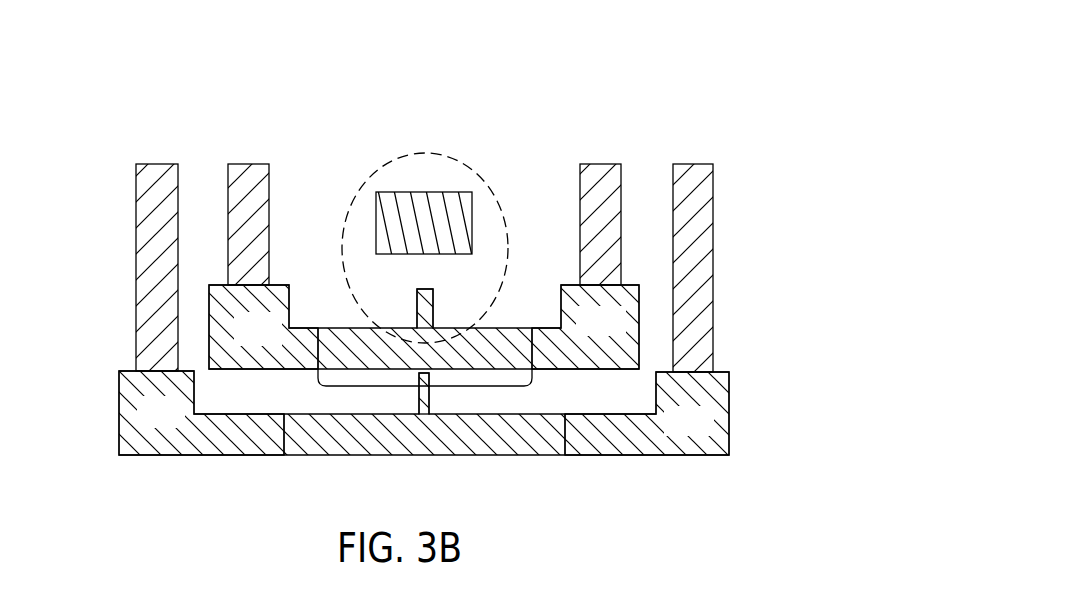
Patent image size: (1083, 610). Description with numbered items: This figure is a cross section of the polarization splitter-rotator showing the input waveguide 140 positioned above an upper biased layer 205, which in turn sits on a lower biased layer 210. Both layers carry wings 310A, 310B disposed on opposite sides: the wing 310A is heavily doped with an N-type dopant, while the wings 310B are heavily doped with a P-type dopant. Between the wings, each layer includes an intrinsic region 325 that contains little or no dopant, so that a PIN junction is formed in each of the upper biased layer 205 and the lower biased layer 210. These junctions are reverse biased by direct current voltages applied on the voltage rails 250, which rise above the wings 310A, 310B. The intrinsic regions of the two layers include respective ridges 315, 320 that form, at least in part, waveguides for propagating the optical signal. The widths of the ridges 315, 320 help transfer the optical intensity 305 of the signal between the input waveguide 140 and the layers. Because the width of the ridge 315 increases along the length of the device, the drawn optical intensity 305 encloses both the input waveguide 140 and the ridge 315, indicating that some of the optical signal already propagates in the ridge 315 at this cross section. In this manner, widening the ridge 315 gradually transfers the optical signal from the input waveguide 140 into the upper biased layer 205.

The optical intensity 305 is at (437, 153).
The input waveguide 140 is at (448, 192).
The voltage rails 250 is at (245, 164).
The wings 310B is at (208, 313).
The wing 310A is at (647, 304).
The upper biased layer 205 is at (760, 372).
The lower biased layer 210 is at (760, 457).
The ridge 315 is at (412, 310).
The ridge 320 is at (432, 400).
The intrinsic region 325 is at (431, 388).